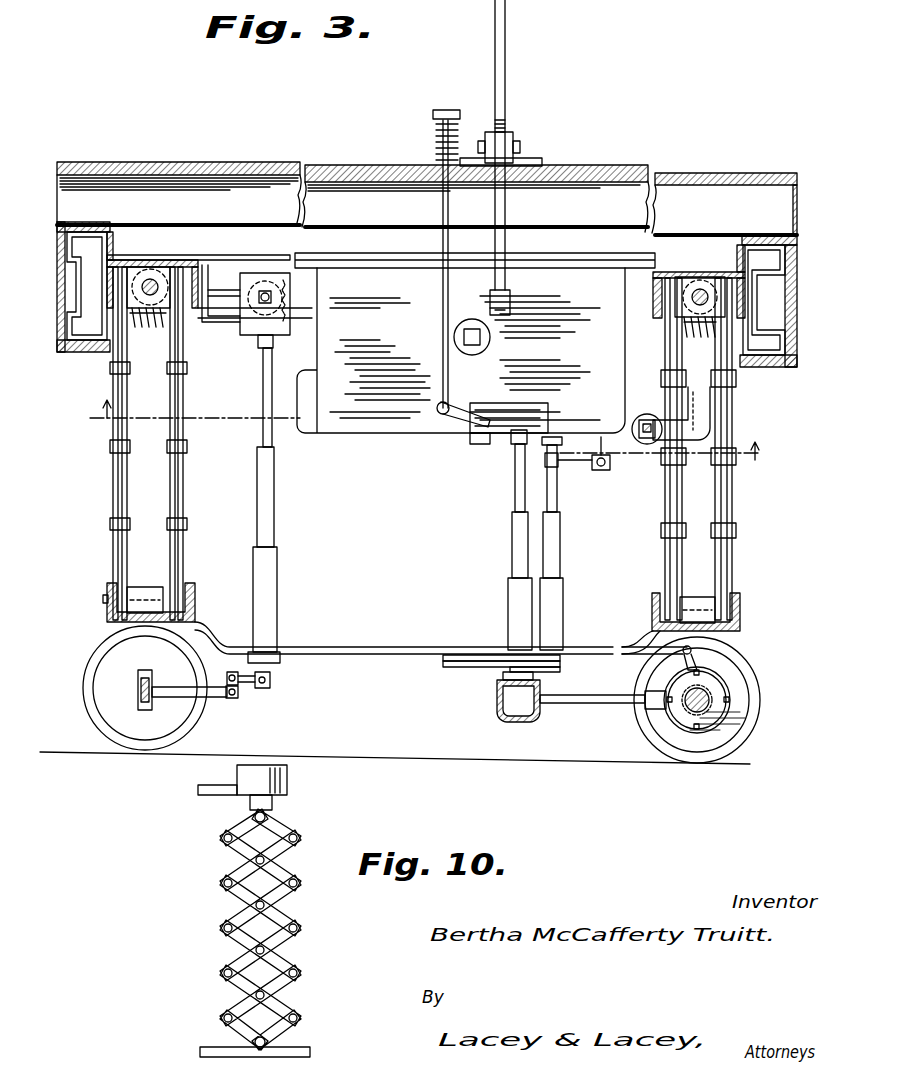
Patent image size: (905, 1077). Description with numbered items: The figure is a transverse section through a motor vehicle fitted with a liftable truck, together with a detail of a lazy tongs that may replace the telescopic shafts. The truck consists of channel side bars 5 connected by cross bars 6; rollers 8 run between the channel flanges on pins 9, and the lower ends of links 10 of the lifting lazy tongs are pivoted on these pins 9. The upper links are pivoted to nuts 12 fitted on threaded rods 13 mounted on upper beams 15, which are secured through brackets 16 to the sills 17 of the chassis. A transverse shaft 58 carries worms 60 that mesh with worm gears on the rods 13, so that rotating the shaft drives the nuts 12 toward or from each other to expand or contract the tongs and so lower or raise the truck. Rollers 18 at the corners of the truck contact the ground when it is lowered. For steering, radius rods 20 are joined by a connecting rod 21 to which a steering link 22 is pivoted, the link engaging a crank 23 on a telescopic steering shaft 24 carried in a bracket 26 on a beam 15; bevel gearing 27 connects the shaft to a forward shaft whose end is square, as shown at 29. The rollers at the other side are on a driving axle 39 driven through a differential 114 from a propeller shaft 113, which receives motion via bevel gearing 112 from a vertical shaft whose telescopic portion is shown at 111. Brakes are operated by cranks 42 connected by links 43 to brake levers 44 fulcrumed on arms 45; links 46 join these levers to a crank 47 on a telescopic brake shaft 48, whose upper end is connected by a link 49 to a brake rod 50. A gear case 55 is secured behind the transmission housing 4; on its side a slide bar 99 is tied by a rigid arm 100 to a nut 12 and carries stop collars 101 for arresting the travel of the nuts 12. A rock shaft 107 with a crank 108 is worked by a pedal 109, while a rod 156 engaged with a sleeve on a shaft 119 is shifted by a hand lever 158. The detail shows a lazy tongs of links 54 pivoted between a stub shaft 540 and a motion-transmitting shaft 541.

In FIG. 3, the transmission housing 4 is at (428, 436).
In FIG. 3, the side bars 5 is at (107, 616).
In FIG. 3, the cross bars 6 is at (396, 648).
In FIG. 3, the rollers 8 is at (146, 597).
In FIG. 3, the pins 9 is at (103, 599).
In FIG. 3, the links 10 is at (184, 508).
In FIG. 3, the nuts 12 is at (172, 268).
In FIG. 3, the worm shafts or threaded rods 13 is at (152, 284).
In FIG. 3, the upper channel bars or beams 15 is at (138, 260).
In FIG. 3, the brackets 16 is at (108, 298).
In FIG. 3, the sills 17 is at (58, 300).
In FIG. 3, the rollers or small wheels 18 is at (149, 728).
In FIG. 3, the radius rods 20 is at (180, 695).
In FIG. 3, the link or connecting rod 21 is at (235, 700).
In FIG. 3, the steering link 22 is at (232, 672).
In FIG. 3, the crank 23 is at (264, 690).
In FIG. 3, the steering shaft 24 is at (294, 680).
In FIG. 3, the bracket 26 is at (227, 330).
In FIG. 3, the bevel gearing 27 is at (290, 306).
In FIG. 3, the square end of shaft 29 is at (265, 290).
In FIG. 3, the driving axle 39 is at (710, 702).
In FIG. 3, the levers or cranks 42 is at (699, 668).
In FIG. 3, the links 43 is at (640, 648).
In FIG. 3, the brake levers 44 is at (455, 668).
In FIG. 3, the brackets or arms 45 is at (449, 656).
In FIG. 3, the links 46 is at (503, 684).
In FIG. 3, the crank 47 is at (545, 674).
In FIG. 3, the brake shaft 48 is at (558, 505).
In FIG. 3, the link 49 is at (578, 464).
In FIG. 3, the brake rod 50 is at (600, 440).
In FIG. 10, the links 54 is at (238, 938).
In FIG. 3, the gear case 55 is at (475, 343).
In FIG. 3, the transverse shaft 58 is at (218, 312).
In FIG. 3, the worms 60 is at (155, 328).
In FIG. 3, the slide bar 99 is at (648, 415).
In FIG. 3, the link or rigid arm 100 is at (716, 431).
In FIG. 3, the stop collars 101 is at (646, 445).
In FIG. 3, the rock shaft 107 is at (498, 440).
In FIG. 3, the crank 108 is at (465, 422).
In FIG. 3, the pedal or push rod 109 is at (443, 206).
In FIG. 3, the telescopic portion of vertical shaft 111 is at (515, 541).
In FIG. 3, the bevel gearing 112 is at (521, 707).
In FIG. 3, the propeller shaft 113 is at (587, 704).
In FIG. 3, the differential 114 is at (688, 716).
In FIG. 3, the shaft 119 is at (472, 330).
In FIG. 3, the rod 156 is at (465, 370).
In FIG. 3, the hand lever 158 is at (504, 80).
In FIG. 10, the stub shaft 540 is at (268, 1043).
In FIG. 10, the motion-transmitting shaft 541 is at (267, 818).